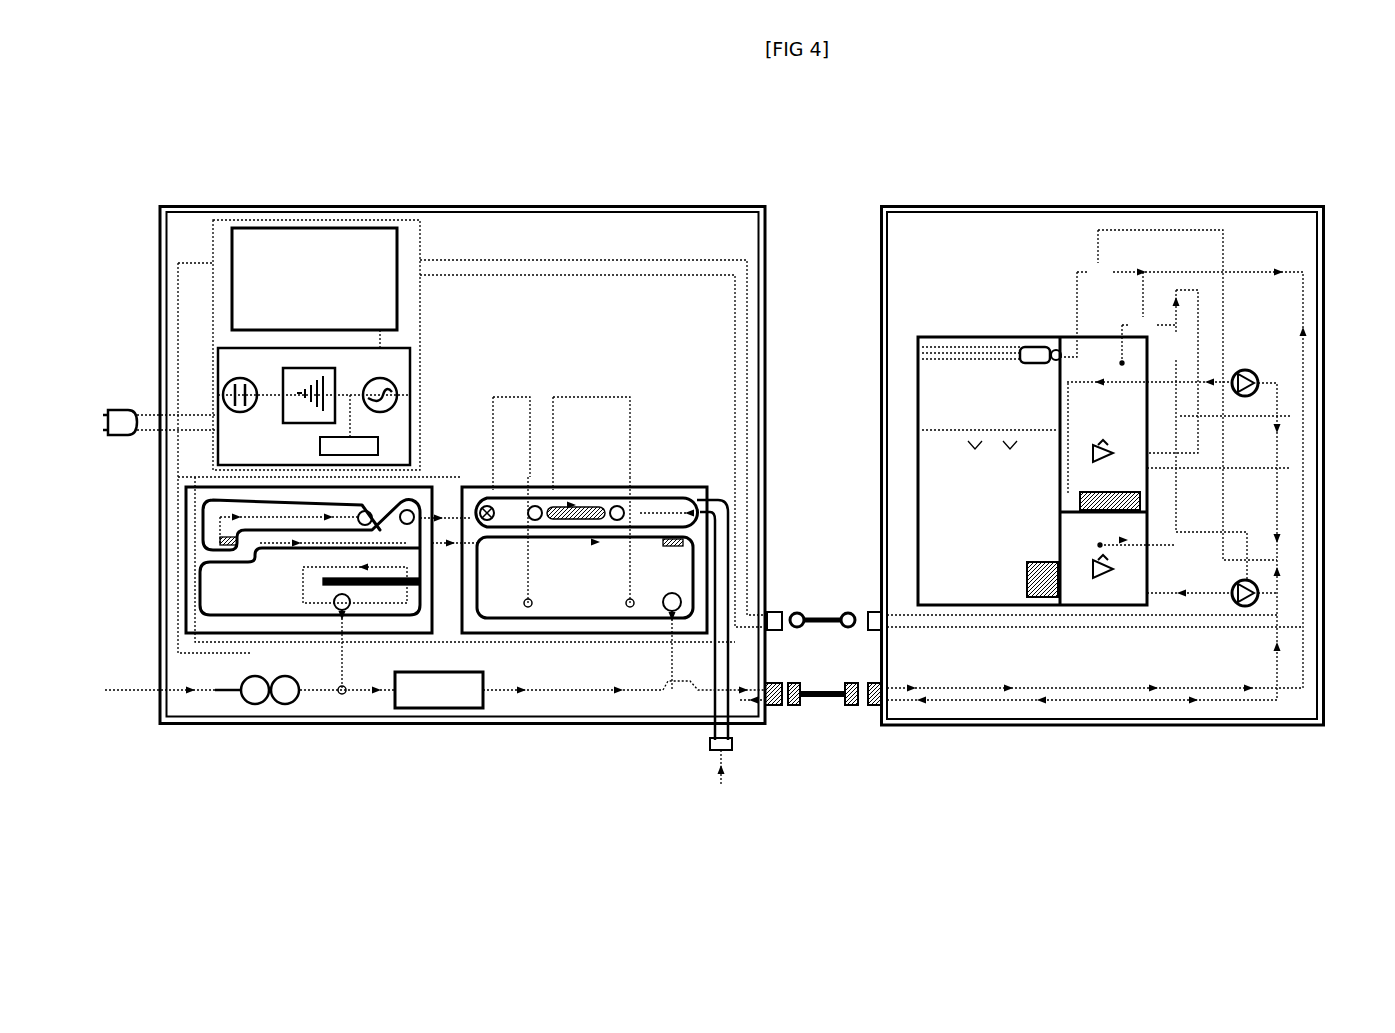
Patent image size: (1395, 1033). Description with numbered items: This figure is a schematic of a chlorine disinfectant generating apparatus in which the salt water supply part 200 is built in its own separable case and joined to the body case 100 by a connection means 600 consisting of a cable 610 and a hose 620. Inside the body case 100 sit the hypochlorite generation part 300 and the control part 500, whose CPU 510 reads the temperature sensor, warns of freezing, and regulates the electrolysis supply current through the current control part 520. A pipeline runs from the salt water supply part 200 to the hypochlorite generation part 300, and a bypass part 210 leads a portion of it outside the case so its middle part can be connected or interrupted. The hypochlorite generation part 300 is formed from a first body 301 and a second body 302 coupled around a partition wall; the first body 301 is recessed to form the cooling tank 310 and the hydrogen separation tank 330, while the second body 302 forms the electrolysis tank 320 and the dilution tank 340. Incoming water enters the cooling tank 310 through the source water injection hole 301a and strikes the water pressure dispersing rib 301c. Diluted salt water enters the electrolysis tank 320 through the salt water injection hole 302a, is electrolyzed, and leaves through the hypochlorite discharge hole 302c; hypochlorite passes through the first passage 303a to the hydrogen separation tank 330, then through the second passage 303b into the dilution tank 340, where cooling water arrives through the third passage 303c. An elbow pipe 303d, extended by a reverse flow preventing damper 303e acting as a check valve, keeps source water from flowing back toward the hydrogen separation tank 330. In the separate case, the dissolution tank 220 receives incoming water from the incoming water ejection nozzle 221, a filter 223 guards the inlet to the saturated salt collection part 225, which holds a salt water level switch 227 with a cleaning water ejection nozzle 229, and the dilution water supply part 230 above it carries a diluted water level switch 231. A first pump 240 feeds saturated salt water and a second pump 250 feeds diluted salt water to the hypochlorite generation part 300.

The body case 100 is at (490, 206).
The control part 500 is at (256, 311).
The CPU 510 is at (232, 300).
The current control part 520 is at (240, 348).
The hypochlorite generation part 300 is at (220, 660).
The first body 301 is at (186, 620).
The source water injection hole 301a is at (340, 612).
The water pressure dispersing rib 301c is at (350, 612).
The first passage 303a is at (228, 547).
The second passage 303b is at (368, 512).
The third passage 303c is at (412, 512).
The elbow pipe 303d is at (560, 507).
The reverse flow preventing damper 303e is at (620, 507).
The second body 302 is at (530, 540).
The salt water injection hole 302a is at (668, 612).
The hypochlorite discharge hole 302c is at (720, 500).
The cooling tank 310 is at (196, 598).
The electrolysis tank 320 is at (563, 633).
The hydrogen separation tank 330 is at (215, 562).
The dilution tank 340 is at (490, 525).
The bypass part 210 is at (445, 723).
The salt water supply part 200 is at (1225, 206).
The dissolution tank 220 is at (947, 378).
The incoming water ejection nozzle 221 is at (1035, 345).
The filter 223 is at (1027, 580).
The saturated salt collection part 225 is at (1147, 512).
The salt water level switch 227 is at (1147, 565).
The cleaning water ejection nozzle 229 is at (1147, 540).
The dilution water supply part 230 is at (1127, 482).
The diluted water level switch 231 is at (1237, 417).
The first pump 240 is at (1252, 600).
The second pump 250 is at (1252, 374).
The connection means 600 is at (823, 724).
The cable 610 is at (815, 632).
The hose 620 is at (832, 700).